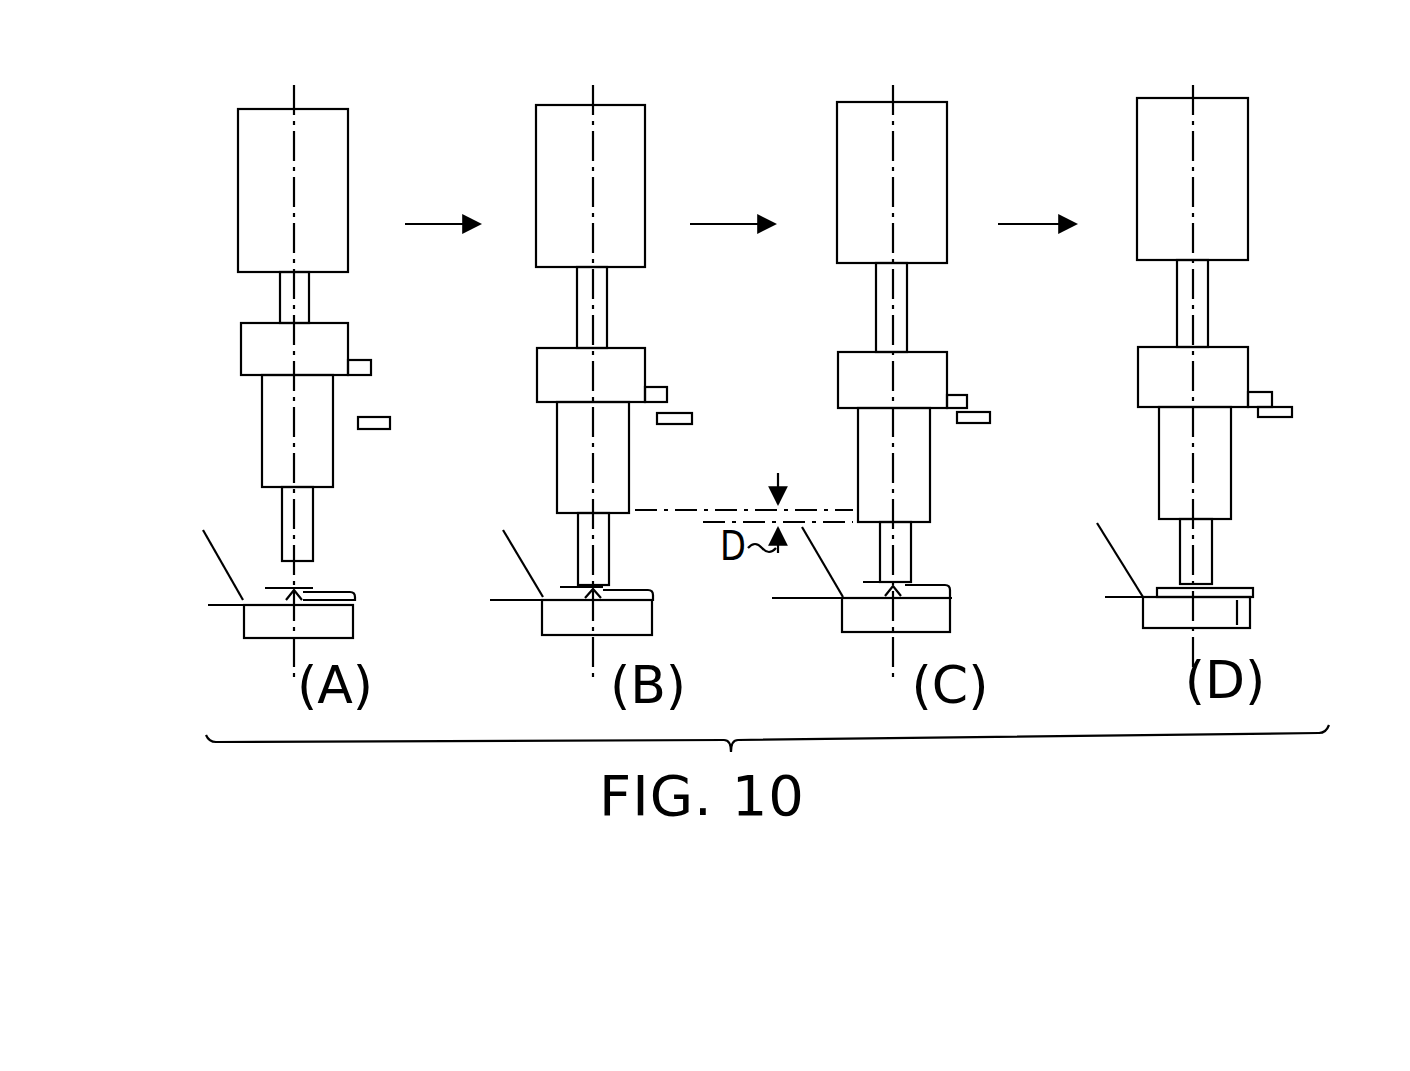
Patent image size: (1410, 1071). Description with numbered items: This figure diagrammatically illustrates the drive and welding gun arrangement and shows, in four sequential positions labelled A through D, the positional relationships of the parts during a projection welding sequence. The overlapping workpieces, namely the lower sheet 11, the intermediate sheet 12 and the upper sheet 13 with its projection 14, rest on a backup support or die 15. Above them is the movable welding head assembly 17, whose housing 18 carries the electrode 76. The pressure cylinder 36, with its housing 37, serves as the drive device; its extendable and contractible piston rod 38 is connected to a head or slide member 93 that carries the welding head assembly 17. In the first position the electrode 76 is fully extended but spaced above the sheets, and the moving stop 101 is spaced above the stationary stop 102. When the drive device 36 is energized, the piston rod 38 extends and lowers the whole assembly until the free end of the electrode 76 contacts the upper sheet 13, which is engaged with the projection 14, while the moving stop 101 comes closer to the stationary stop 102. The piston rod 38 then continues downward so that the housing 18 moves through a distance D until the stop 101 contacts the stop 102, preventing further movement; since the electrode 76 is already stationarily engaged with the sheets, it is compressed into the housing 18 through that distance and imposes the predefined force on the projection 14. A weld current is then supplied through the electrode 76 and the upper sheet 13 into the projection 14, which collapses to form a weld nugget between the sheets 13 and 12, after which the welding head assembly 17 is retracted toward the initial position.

The lower sheet 11 is at (225, 608).
The intermediate sheet 12 is at (257, 600).
The upper sheet 13 is at (300, 592).
The projection 14 is at (352, 598).
The backup support or die 15 is at (280, 625).
The welding head assembly 17 is at (258, 412).
The housing 18 is at (272, 447).
The pressure cylinder 36 is at (232, 175).
The housing of the pressure cylinder 37 is at (333, 163).
The piston rod 38 is at (289, 293).
The electrode 76 is at (305, 522).
The head or slide member 93 is at (250, 347).
The moving stop 101 is at (357, 362).
The stationary stop 102 is at (385, 424).